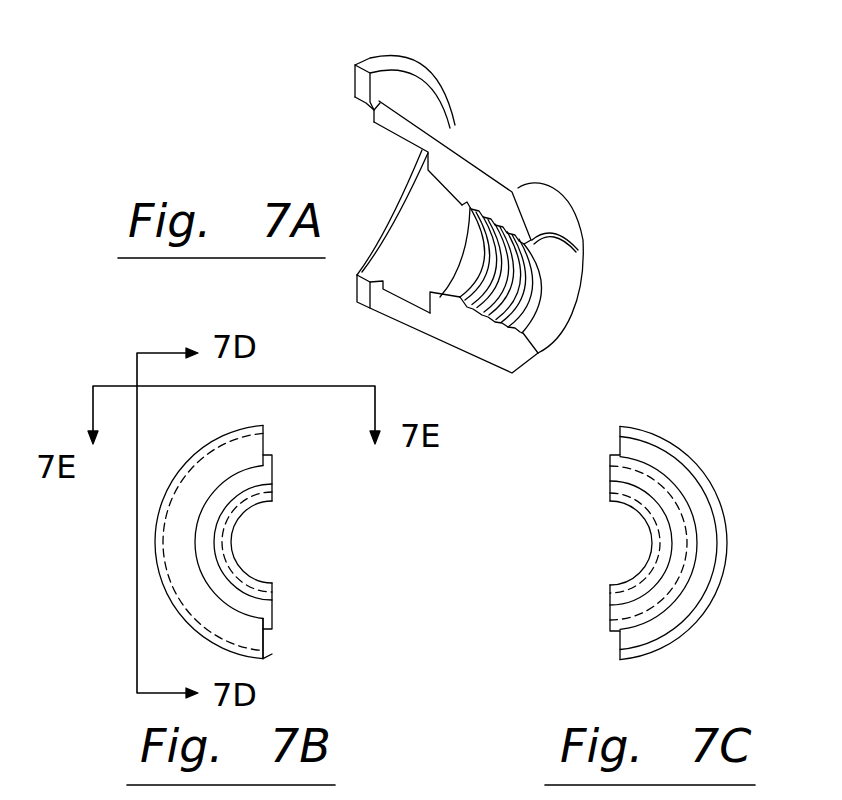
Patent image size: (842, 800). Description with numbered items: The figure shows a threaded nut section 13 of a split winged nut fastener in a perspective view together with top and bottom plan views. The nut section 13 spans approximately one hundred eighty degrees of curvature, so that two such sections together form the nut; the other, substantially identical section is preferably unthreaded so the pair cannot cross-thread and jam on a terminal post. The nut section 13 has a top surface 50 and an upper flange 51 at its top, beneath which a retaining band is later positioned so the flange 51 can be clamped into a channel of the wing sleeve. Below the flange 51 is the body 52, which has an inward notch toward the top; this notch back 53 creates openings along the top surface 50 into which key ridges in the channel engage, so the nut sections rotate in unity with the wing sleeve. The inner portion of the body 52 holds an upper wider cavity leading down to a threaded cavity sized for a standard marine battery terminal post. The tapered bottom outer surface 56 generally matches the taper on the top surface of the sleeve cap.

In FIG. 7A, the nut section 13 is at (489, 191).
In FIG. 7B, the nut section 13 is at (265, 545).
In FIG. 7C, the nut section 13 is at (614, 538).
In FIG. 7B, the top surface 50 is at (187, 555).
In FIG. 7A, the upper flange 51 is at (410, 62).
In FIG. 7C, the upper flange 51 is at (670, 444).
In FIG. 7A, the body 52 is at (478, 140).
In FIG. 7A, the notch back 53 is at (362, 107).
In FIG. 7B, the notch back 53 is at (265, 637).
In FIG. 7A, the tapered bottom outer surface 56 is at (565, 205).
In FIG. 7C, the tapered bottom outer surface 56 is at (617, 470).